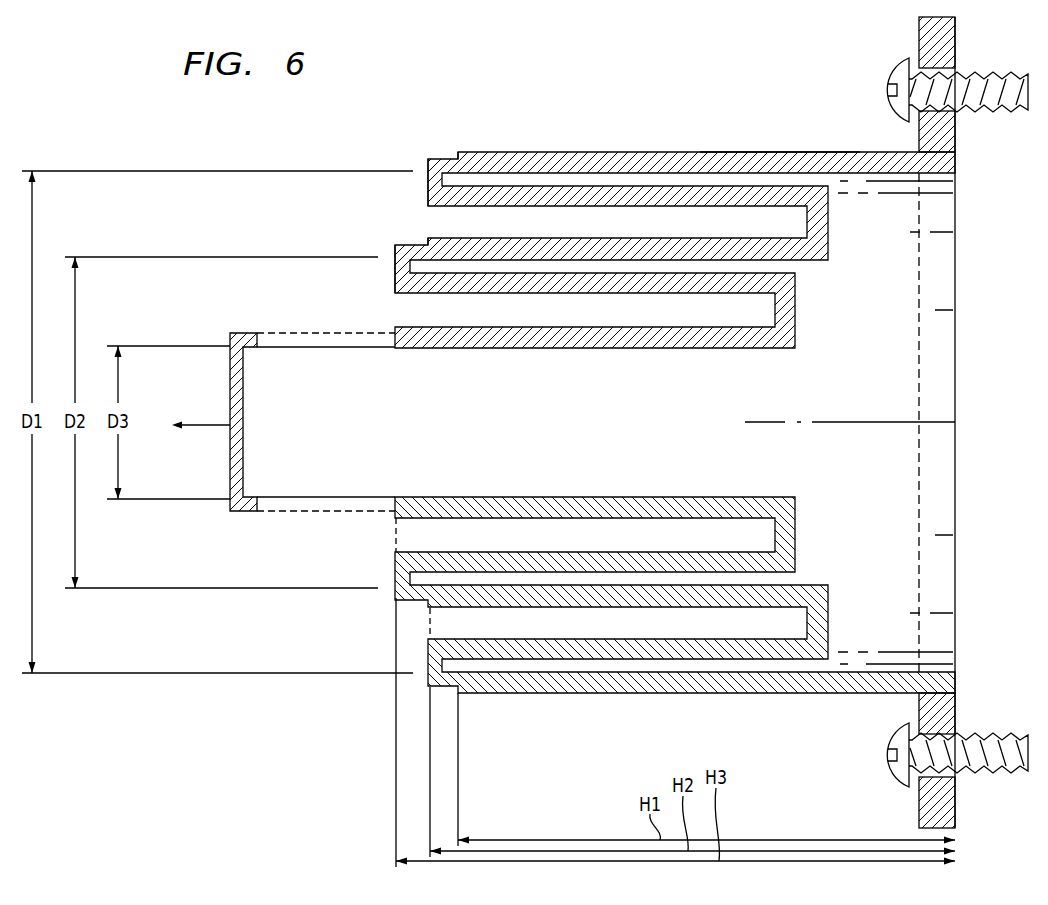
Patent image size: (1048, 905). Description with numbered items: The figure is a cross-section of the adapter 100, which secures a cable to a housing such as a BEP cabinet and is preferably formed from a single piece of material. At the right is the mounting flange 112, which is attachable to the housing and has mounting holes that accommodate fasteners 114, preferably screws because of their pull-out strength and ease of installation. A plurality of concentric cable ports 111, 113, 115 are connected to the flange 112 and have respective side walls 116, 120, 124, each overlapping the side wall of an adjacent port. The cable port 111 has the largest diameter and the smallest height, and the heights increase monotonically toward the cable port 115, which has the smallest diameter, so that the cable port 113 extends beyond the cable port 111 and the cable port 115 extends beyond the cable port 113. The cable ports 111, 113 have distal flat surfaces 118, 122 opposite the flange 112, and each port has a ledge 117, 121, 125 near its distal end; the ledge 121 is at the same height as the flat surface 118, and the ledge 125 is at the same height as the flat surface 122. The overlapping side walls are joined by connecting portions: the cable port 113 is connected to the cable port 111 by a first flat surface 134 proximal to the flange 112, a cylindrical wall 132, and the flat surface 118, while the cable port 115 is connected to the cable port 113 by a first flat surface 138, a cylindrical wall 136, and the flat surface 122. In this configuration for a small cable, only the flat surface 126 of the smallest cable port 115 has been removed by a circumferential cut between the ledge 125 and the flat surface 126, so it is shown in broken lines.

The adapter 100 is at (571, 78).
The cable port 111 is at (642, 143).
The mounting flange 112 is at (919, 30).
The cable port 113 is at (578, 232).
The fasteners 114 is at (900, 62).
The cable port 115 is at (566, 319).
The side wall 116 is at (778, 151).
The ledge 117 is at (458, 154).
The distal flat surface 118 is at (427, 163).
The side wall 120 is at (710, 239).
The ledge 121 is at (427, 242).
The distal flat surface 122 is at (395, 278).
The side wall 124 is at (665, 327).
The ledge 125 is at (394, 328).
The flat surface 126 is at (230, 375).
The cylindrical wall 132 is at (556, 206).
The first flat surface 134 is at (830, 226).
The cylindrical wall 136 is at (516, 293).
The first flat surface 138 is at (797, 311).